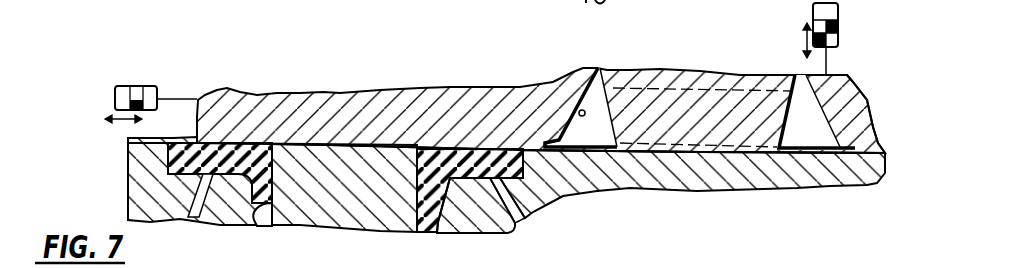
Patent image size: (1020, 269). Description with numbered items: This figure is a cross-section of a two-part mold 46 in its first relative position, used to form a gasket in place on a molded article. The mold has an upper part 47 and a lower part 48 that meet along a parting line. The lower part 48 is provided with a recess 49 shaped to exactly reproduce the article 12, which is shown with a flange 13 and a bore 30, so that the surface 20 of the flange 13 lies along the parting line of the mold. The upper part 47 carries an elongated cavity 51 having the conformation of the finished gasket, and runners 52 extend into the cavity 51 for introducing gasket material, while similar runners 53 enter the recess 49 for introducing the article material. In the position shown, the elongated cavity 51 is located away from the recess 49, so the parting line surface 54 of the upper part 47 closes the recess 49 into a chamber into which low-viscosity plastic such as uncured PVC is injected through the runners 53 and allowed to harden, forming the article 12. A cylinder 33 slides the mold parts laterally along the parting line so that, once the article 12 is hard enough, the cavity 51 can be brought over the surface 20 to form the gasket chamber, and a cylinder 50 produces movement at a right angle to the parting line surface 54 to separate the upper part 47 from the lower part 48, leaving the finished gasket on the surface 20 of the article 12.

The article 12 is at (270, 212).
The flange 13 is at (485, 191).
The surface 20 is at (428, 147).
The bore 30 is at (410, 212).
The cylinder 33 is at (143, 85).
The two-part mold 46 is at (838, 85).
The upper part 47 is at (863, 110).
The lower part 48 is at (778, 184).
The recess 49 is at (253, 221).
The cylinder 50 is at (838, 35).
The elongated cavity 51 is at (578, 110).
The runners 52 is at (600, 68).
The runners 53 is at (187, 217).
The parting line surface 54 is at (362, 148).